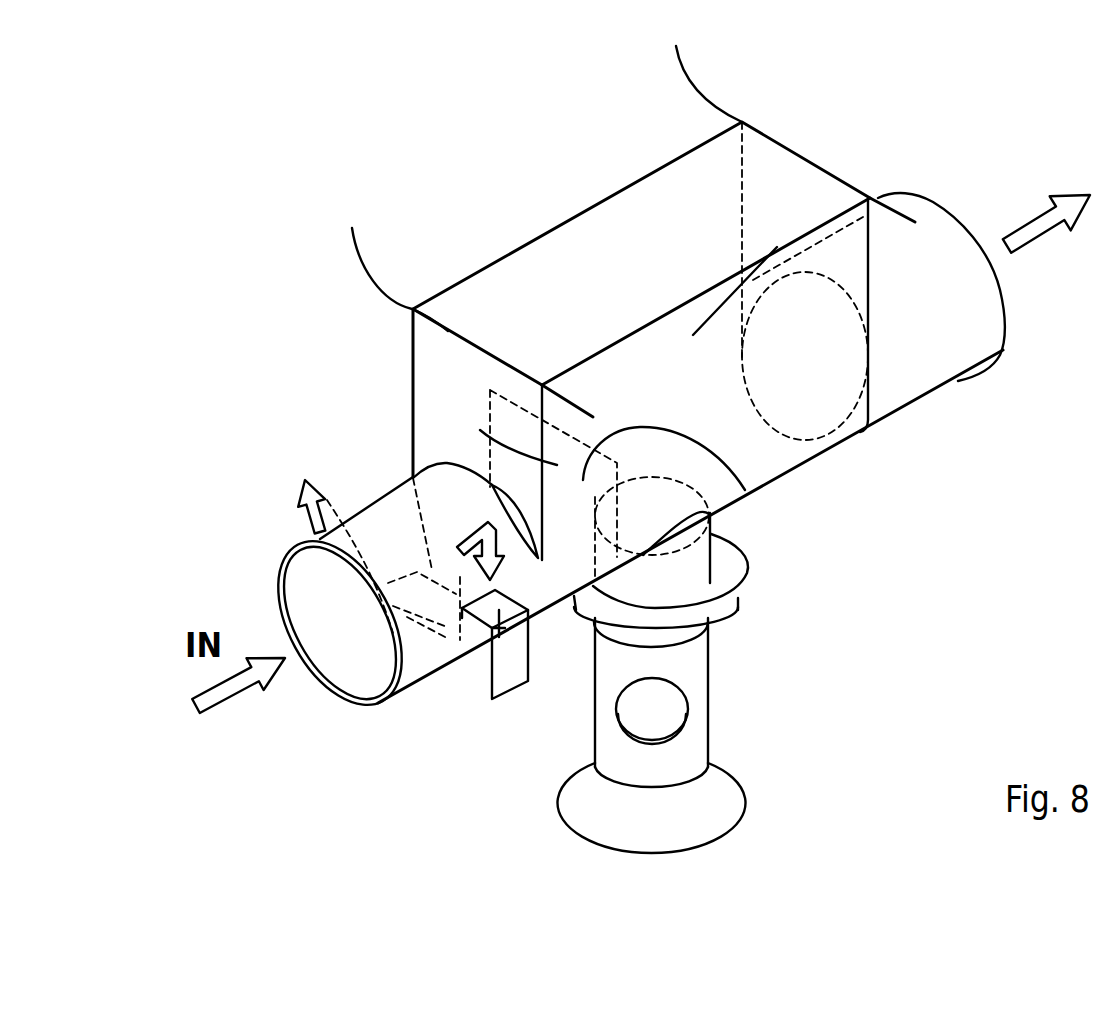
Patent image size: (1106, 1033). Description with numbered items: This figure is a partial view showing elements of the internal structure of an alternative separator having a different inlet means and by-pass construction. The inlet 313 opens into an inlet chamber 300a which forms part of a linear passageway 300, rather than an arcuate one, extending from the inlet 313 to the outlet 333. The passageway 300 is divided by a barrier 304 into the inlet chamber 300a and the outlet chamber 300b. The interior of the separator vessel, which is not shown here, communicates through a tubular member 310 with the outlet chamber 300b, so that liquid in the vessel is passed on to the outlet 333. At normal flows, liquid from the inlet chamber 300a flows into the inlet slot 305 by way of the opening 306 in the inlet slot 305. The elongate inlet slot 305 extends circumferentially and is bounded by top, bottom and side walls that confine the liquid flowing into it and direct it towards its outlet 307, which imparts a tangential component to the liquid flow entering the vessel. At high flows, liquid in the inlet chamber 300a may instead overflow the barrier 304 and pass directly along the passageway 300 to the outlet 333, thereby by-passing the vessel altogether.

The linear passageway 300 is at (890, 260).
The inlet chamber 300a is at (480, 430).
The outlet chamber 300b is at (742, 310).
The barrier 304 is at (745, 490).
The inlet slot 305 is at (480, 674).
The opening 306 is at (499, 637).
The outlet of inlet slot 307 is at (287, 618).
The tubular member 310 is at (683, 670).
The inlet 313 is at (405, 711).
The outlet 333 is at (913, 353).